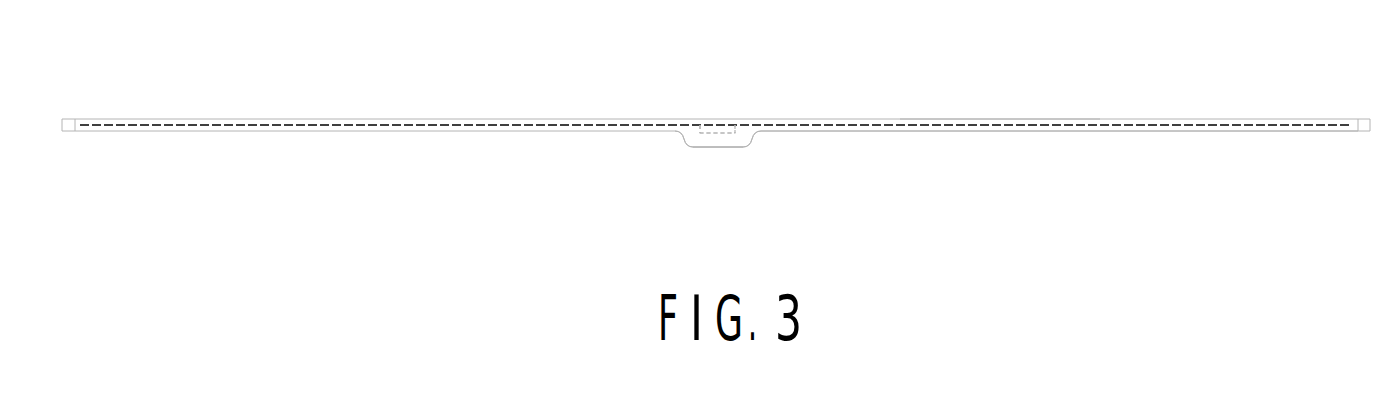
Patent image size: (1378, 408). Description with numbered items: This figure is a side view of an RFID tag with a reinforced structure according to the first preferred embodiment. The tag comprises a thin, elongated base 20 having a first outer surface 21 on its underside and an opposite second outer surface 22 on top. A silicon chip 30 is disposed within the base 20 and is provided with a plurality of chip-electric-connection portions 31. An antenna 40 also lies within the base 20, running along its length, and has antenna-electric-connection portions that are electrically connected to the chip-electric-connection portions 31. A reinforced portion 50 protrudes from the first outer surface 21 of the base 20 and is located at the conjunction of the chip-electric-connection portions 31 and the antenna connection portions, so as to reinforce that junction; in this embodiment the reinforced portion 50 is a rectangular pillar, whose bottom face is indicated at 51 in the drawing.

The base 20 is at (905, 90).
The first outer surface 21 is at (1030, 133).
The second outer surface 22 is at (990, 120).
The silicon chip 30 is at (721, 124).
The chip-electric-connection portions 31 is at (700, 124).
The antenna 40 is at (525, 123).
The reinforced portion 50 is at (693, 178).
The recess bottom wall 51 is at (725, 148).